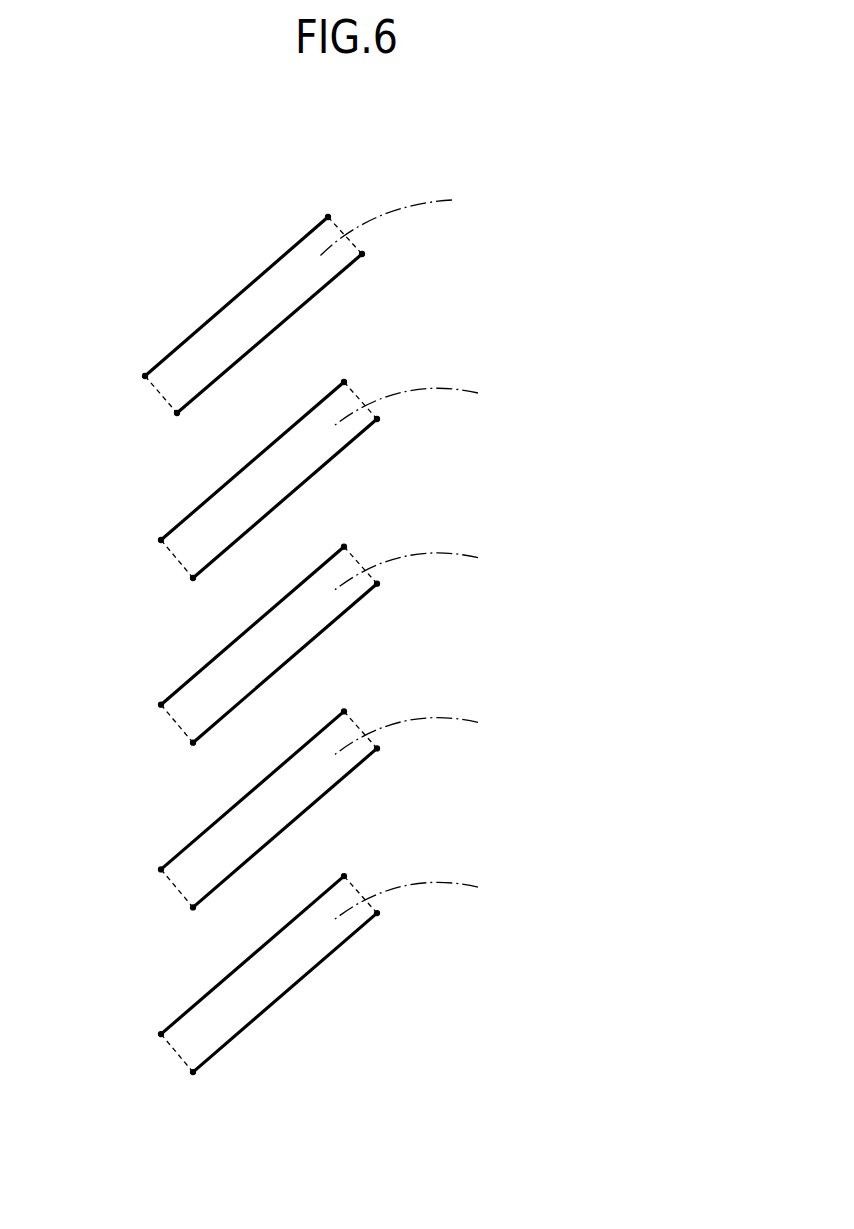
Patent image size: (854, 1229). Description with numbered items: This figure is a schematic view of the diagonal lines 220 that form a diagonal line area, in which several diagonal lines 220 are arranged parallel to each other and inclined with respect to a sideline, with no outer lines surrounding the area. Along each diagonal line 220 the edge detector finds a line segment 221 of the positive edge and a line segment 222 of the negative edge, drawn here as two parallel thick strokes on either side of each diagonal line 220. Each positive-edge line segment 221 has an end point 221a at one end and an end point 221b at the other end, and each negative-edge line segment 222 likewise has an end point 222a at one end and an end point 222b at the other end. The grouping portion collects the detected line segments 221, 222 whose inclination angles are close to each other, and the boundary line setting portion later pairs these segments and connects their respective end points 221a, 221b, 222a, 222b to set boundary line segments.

The diagonal line 220 is at (419, 553).
The line segment of the positive edge 221 is at (283, 255).
The end point of the positive-edge line segment 221a is at (145, 376).
The end point of the positive-edge line segment 221b is at (328, 217).
The line segment of the negative edge 222 is at (332, 281).
The end point of the negative-edge line segment 222a is at (177, 413).
The end point of the negative-edge line segment 222b is at (362, 254).